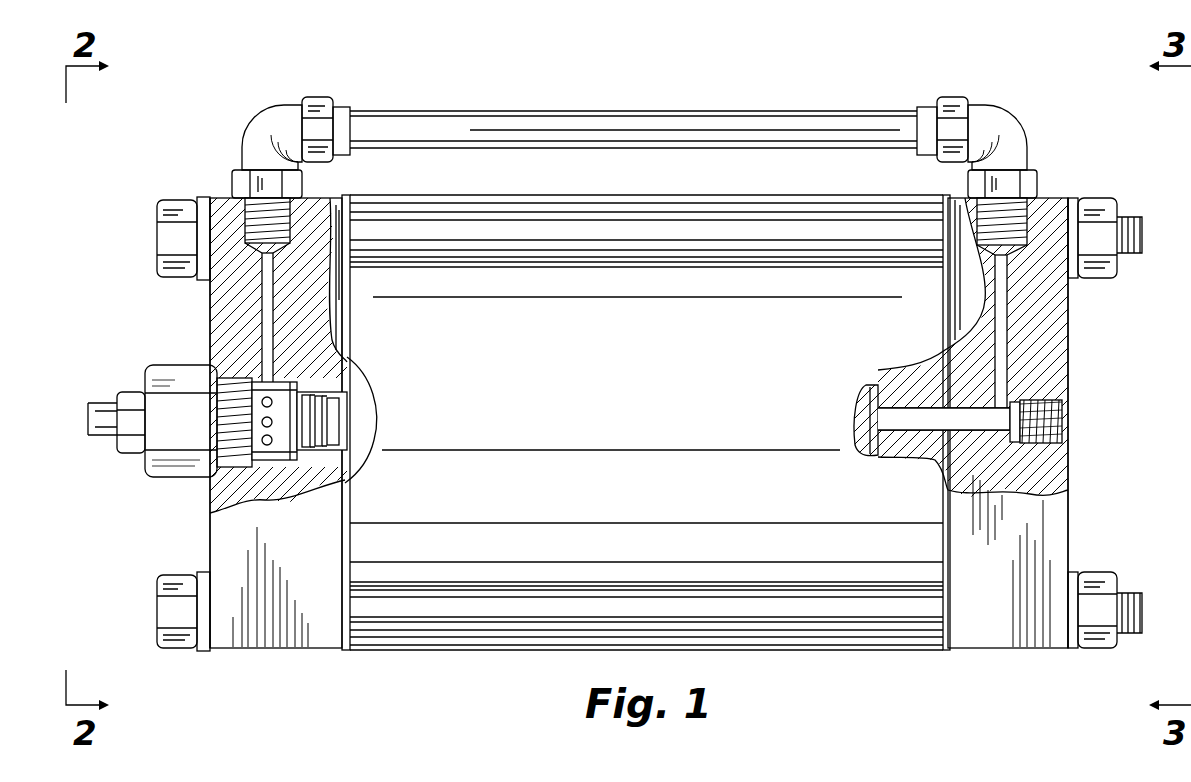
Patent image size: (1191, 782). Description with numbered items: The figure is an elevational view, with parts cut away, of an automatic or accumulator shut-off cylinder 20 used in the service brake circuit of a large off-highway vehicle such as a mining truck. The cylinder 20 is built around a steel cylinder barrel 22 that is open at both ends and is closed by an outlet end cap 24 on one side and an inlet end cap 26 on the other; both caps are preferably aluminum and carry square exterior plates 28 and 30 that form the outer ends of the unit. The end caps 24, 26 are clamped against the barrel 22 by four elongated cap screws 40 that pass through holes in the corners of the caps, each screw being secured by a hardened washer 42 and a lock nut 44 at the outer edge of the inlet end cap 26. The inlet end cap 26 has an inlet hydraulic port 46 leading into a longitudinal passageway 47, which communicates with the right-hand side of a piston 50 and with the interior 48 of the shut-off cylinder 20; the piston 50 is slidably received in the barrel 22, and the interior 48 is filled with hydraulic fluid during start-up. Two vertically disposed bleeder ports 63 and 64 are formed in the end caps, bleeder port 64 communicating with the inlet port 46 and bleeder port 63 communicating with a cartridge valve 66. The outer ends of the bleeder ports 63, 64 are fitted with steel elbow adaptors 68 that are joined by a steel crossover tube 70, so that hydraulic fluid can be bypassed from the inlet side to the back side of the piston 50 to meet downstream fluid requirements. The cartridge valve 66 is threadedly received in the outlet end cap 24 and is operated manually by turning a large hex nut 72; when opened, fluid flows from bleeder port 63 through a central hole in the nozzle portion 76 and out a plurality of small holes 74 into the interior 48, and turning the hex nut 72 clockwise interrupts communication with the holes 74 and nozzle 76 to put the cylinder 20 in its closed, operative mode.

The shut-off cylinder 20 is at (812, 96).
The cylinder barrel 22 is at (680, 207).
The outlet end cap 24 is at (268, 636).
The inlet end cap 26 is at (996, 632).
The exterior plate 28 is at (210, 536).
The exterior plate 30 is at (1068, 497).
The cap screws 40 is at (182, 208).
The hardened washer 42 is at (1069, 200).
The lock nut 44 is at (1105, 205).
The inlet hydraulic port 46 is at (1067, 408).
The longitudinal passageway 47 is at (1040, 437).
The interior 48 is at (378, 428).
The piston 50 is at (858, 448).
The bleeder port 63 is at (262, 297).
The bleeder port 64 is at (1000, 297).
The cartridge valve 66 is at (233, 374).
The elbow adaptors 68 is at (265, 124).
The crossover tube 70 is at (622, 131).
The hex nut 72 is at (160, 470).
The small holes 74 is at (264, 468).
The nozzle portion 76 is at (318, 453).